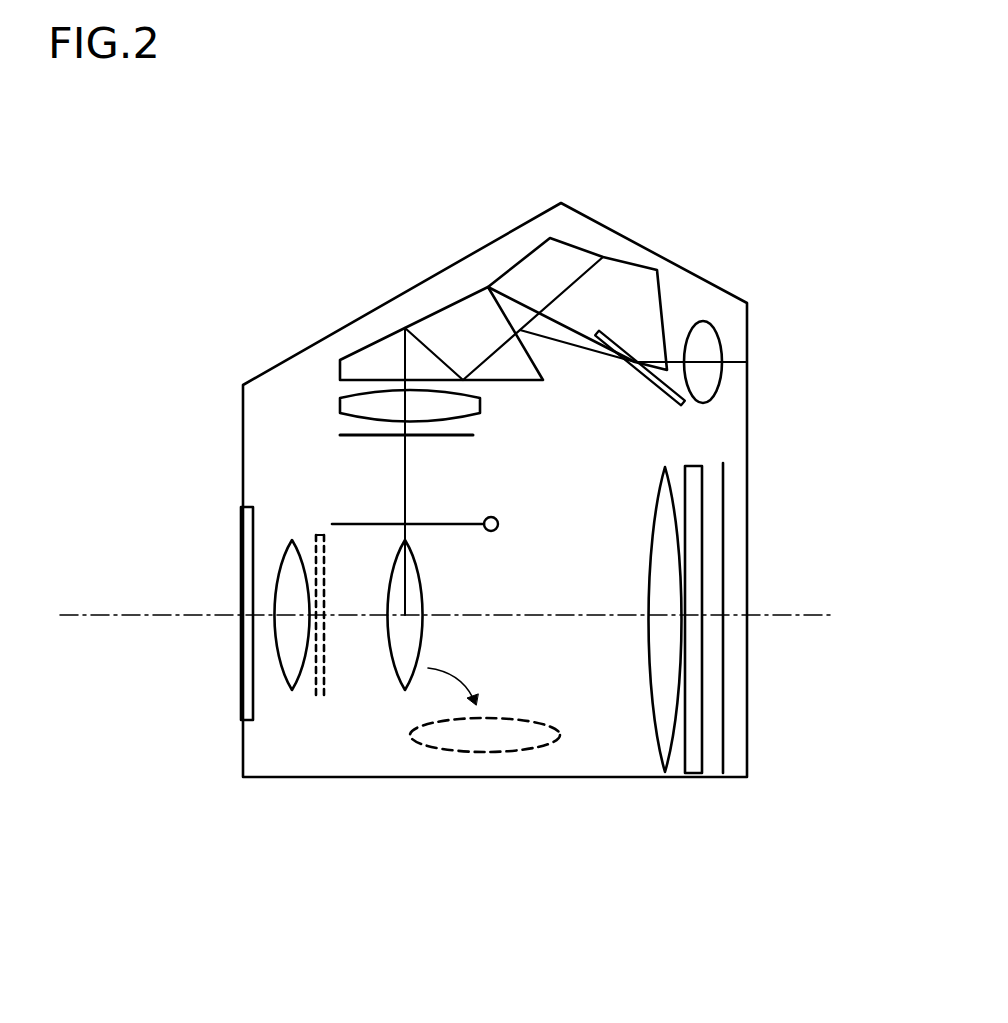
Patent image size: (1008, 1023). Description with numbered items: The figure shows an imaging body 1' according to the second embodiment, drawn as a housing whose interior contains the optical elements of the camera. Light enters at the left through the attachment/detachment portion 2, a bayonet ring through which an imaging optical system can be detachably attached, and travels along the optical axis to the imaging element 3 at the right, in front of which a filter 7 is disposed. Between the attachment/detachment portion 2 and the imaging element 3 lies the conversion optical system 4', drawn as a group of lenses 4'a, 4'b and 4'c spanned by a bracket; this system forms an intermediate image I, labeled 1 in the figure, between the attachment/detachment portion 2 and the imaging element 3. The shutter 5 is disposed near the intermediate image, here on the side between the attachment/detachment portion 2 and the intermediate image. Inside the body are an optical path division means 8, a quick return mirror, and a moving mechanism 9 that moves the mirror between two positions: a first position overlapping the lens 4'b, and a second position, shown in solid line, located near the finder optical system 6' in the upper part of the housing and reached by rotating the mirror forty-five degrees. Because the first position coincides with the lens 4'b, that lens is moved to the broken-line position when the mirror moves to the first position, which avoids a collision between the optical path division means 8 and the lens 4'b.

The imaging body 1' is at (541, 467).
The intermediate image 1 is at (200, 432).
The attachment/detachment portion 2 is at (241, 714).
The imaging element 3 is at (724, 553).
The conversion optical system 4' is at (500, 963).
The first lens 4'a is at (325, 733).
The lens 4'b is at (473, 733).
The third lens 4'c is at (650, 696).
The shutter 5 is at (315, 532).
The finder optical system 6' is at (527, 370).
The filter 7 is at (700, 765).
The optical path division means 8 is at (485, 518).
The moving mechanism 9 is at (347, 522).